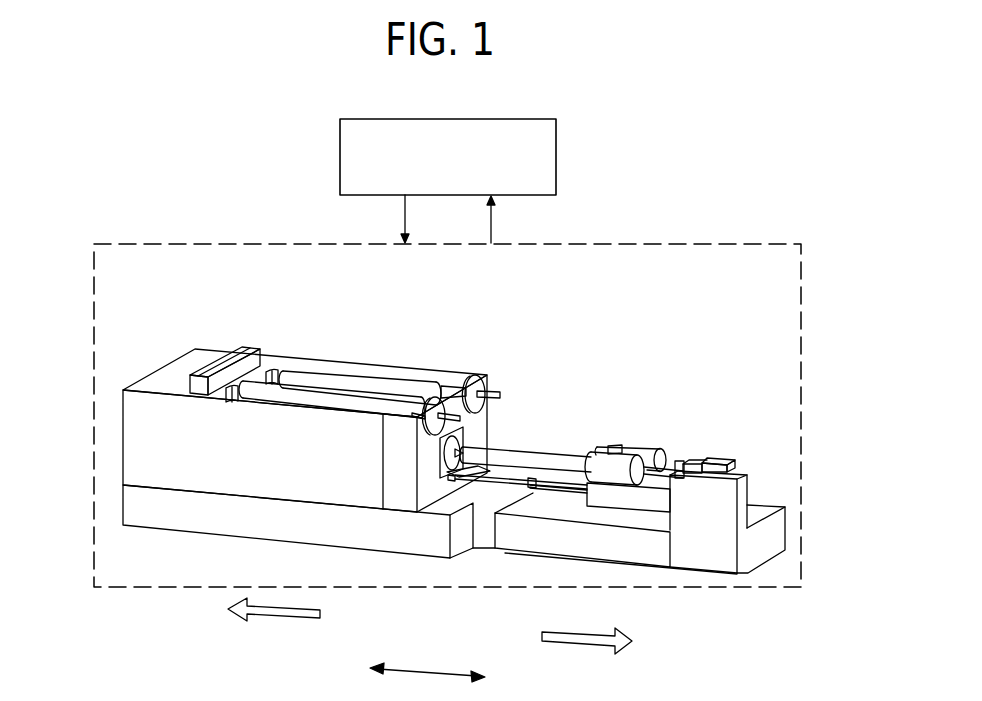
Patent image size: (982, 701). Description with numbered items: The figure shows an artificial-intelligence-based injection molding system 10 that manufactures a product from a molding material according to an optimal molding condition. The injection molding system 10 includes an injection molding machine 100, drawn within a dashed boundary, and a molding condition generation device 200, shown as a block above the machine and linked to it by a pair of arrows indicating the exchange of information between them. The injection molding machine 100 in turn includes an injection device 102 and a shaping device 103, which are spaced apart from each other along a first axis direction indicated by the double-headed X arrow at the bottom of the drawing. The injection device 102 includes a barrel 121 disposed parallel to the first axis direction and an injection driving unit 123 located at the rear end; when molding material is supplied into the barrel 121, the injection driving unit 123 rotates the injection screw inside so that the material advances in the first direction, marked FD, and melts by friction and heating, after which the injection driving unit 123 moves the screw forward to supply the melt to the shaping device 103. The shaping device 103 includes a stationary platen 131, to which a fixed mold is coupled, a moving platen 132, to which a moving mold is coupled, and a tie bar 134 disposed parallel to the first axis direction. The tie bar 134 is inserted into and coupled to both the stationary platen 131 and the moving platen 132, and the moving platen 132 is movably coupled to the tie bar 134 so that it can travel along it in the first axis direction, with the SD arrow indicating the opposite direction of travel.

The injection molding system 10 is at (74, 132).
The injection molding machine 100 is at (718, 243).
The molding condition generation device 200 is at (556, 160).
The shaping device 103 is at (245, 291).
The moving platen 132 is at (249, 377).
The tie bar 134 is at (344, 386).
The stationary platen 131 is at (453, 383).
The injection device 102 is at (745, 385).
The barrel 121 is at (534, 460).
The injection driving unit 123 is at (723, 462).